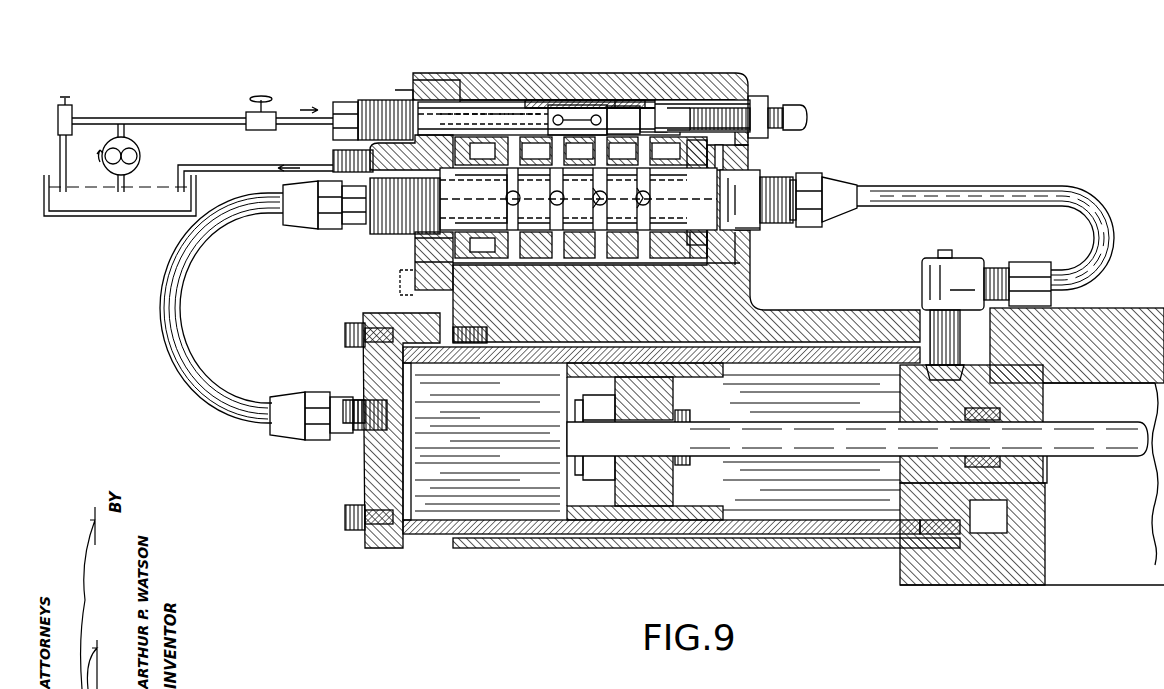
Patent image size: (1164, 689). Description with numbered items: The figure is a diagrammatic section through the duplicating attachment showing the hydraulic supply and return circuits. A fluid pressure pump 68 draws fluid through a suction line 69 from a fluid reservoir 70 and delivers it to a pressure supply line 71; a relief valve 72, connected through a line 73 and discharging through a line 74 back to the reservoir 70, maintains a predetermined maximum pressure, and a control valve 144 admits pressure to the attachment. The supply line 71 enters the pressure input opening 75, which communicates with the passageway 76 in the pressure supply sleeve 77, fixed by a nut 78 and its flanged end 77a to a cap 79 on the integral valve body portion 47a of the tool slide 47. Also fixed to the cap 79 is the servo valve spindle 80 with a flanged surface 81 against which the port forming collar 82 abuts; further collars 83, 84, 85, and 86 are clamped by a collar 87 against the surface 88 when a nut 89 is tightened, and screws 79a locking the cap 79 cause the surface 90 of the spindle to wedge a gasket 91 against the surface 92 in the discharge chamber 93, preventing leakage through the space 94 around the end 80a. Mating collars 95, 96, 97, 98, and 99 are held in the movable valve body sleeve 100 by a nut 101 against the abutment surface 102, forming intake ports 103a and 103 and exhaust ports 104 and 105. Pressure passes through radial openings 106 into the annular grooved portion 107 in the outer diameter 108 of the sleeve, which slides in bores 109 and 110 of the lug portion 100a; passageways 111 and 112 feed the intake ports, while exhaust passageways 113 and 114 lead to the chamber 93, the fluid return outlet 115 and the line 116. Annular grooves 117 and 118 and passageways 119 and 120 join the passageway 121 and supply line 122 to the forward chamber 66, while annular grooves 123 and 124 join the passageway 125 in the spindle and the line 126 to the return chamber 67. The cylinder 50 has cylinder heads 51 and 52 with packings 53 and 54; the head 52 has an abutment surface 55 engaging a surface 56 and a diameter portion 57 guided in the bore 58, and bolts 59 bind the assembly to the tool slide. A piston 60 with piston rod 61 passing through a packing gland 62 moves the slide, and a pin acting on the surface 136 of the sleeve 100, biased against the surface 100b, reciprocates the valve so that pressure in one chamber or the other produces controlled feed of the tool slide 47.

The tool slide 47 is at (780, 318).
The valve body portion 47a is at (706, 88).
The cylinder 50 is at (480, 536).
The cylinder head 51 is at (384, 548).
The cylinder head 52 is at (955, 525).
The packing 53 is at (424, 520).
The packing 54 is at (905, 532).
The abutment surface 55 is at (1015, 378).
The surface 56 is at (1000, 374).
The diameter portion 57 is at (1044, 380).
The bore 58 is at (1047, 482).
The bolts 59 is at (352, 328).
The piston 60 is at (562, 386).
The piston rod 61 is at (806, 426).
The packing gland 62 is at (975, 470).
The chamber 66 is at (793, 516).
The chamber 67 is at (542, 548).
The fluid pressure pump 68 is at (140, 150).
The suction line 69 is at (126, 180).
The fluid reservoir 70 is at (120, 216).
The pressure supply line 71 is at (221, 118).
The relief valve 72 is at (70, 112).
The line 73 is at (108, 118).
The line 74 is at (68, 162).
The pressure input opening 75 is at (346, 102).
The passageway 76 is at (490, 102).
The pressure supply sleeve 77 is at (516, 110).
The flanged end 77a is at (432, 88).
The nut 78 is at (396, 100).
The cap 79 is at (415, 257).
The screws 79a is at (400, 283).
The servo valve spindle 80 is at (690, 260).
The end 80a is at (782, 175).
The flanged surface 81 is at (708, 260).
The port forming collar 82 is at (668, 197).
The port forming collar 83 is at (622, 197).
The port forming collar 84 is at (578, 197).
The port forming collar 85 is at (534, 197).
The port forming collar 86 is at (481, 197).
The collar 87 is at (411, 152).
The surface 88 is at (446, 232).
The nut 89 is at (386, 234).
The surface 90 is at (742, 172).
The gasket 91 is at (742, 242).
The surface 92 is at (738, 265).
The discharge chamber 93 is at (682, 104).
The space 94 is at (714, 192).
The mating collar 95 is at (678, 151).
The mating collar 96 is at (622, 151).
The mating collar 97 is at (579, 151).
The mating collar 98 is at (536, 151).
The mating collar 99 is at (481, 151).
The movable valve body sleeve 100 is at (478, 258).
The lug portion 100a is at (617, 100).
The surface 100b is at (642, 100).
The nut 101 is at (736, 266).
The abutment surface 102 is at (508, 258).
The intake port 103 is at (555, 258).
The intake port 103a is at (598, 258).
The exhaust port 104 is at (524, 270).
The exhaust port 105 is at (660, 258).
The radial openings 106 is at (562, 100).
The annular grooved portion 107 is at (590, 78).
The outer diameter 108 is at (476, 82).
The bore 109 is at (550, 106).
The bore 110 is at (639, 106).
The passageway 111 is at (548, 121).
The passageway 112 is at (632, 116).
The exhaust passageway 113 is at (514, 110).
The exhaust passageway 114 is at (654, 112).
The fluid return outlet 115 is at (333, 158).
The line 116 is at (266, 166).
The annular groove 117 is at (615, 210).
The annular groove 118 is at (660, 210).
The passageway 119 is at (615, 202).
The passageway 120 is at (650, 205).
The passageway 121 is at (778, 226).
The supply line 122 is at (1072, 198).
The annular groove 123 is at (543, 212).
The annular groove 124 is at (496, 212).
The passageway 125 is at (434, 241).
The line 126 is at (178, 308).
The surface 136 is at (434, 267).
The control valve 144 is at (261, 96).